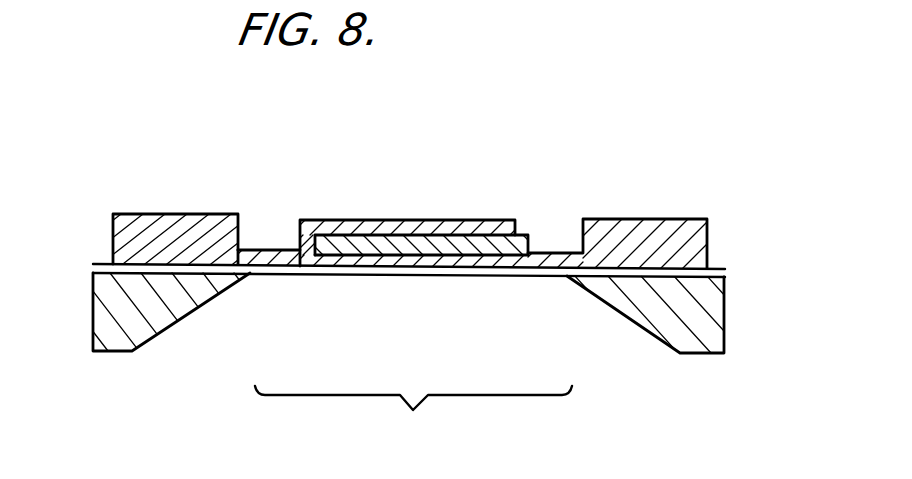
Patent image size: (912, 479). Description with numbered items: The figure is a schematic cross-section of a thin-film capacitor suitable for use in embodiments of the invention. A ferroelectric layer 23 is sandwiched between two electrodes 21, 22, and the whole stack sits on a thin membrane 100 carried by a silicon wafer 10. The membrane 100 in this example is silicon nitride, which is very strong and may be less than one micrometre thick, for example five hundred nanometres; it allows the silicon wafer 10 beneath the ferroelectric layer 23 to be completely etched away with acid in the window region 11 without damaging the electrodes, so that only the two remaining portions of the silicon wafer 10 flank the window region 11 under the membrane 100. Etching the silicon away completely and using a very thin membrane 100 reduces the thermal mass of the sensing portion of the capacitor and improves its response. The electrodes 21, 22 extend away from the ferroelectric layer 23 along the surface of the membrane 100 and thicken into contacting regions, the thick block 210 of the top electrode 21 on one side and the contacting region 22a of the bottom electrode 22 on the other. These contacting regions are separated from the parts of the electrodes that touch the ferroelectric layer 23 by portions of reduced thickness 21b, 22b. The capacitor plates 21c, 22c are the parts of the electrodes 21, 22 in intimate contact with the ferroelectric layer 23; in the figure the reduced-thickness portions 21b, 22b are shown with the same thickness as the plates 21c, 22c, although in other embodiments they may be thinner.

The silicon wafer 10 is at (697, 356).
The window region 11 is at (413, 415).
The electrode 21 is at (262, 186).
The top electrode block portion 210 is at (140, 214).
The portion of reduced thickness 21b is at (265, 248).
The plate of the capacitor 21c is at (410, 220).
The electrode 22 is at (507, 271).
The contacting region 22a is at (653, 236).
The portion of reduced thickness 22b is at (556, 254).
The plate of the capacitor 22c is at (337, 272).
The ferroelectric layer 23 is at (527, 240).
The membrane 100 is at (727, 272).